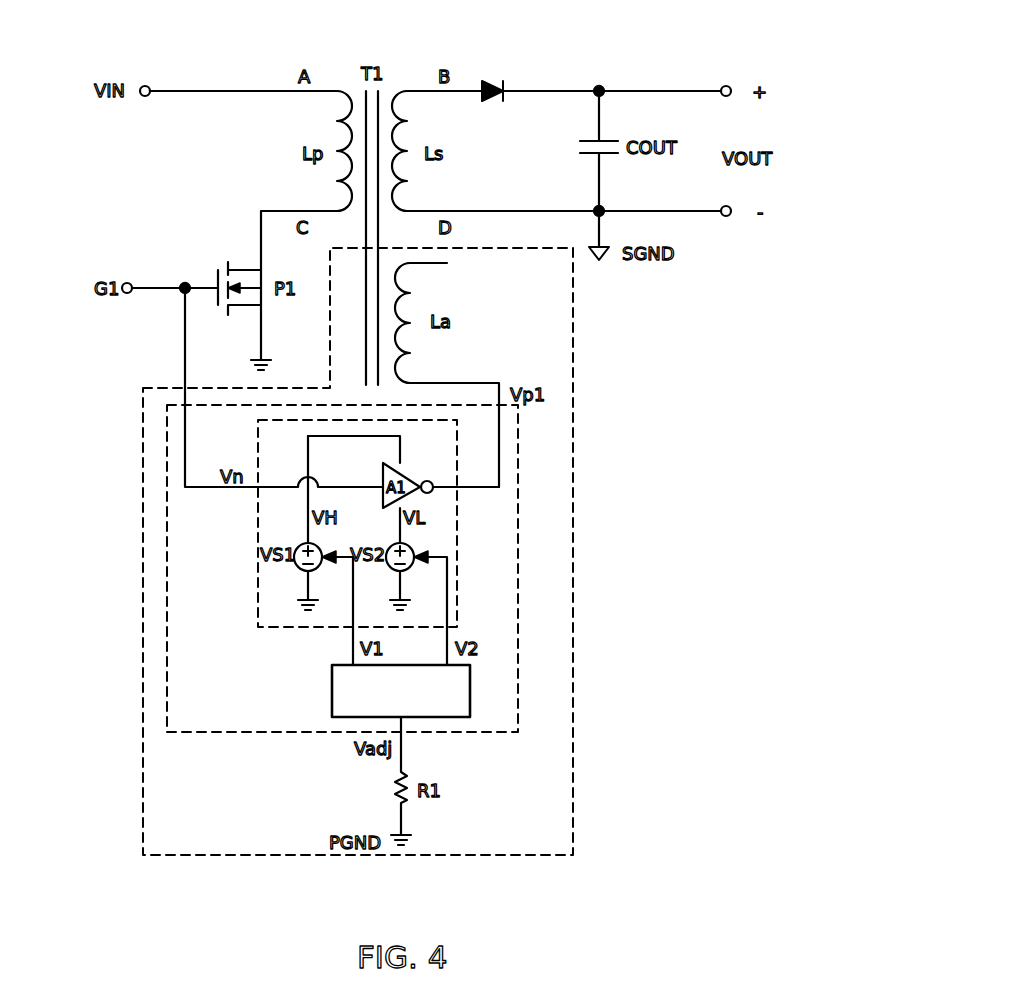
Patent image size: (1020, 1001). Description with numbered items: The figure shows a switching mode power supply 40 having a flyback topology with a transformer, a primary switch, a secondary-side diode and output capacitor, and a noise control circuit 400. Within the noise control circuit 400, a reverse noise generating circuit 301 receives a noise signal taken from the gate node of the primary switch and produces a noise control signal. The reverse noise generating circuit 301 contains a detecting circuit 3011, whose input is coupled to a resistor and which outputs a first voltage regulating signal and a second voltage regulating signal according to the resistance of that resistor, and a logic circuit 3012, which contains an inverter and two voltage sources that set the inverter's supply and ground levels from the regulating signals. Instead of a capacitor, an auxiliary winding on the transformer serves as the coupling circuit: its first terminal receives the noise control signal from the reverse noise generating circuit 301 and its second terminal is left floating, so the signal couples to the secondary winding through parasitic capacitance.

The switching mode power supply 40 is at (706, 52).
The noise control circuit 400 is at (545, 839).
The reverse noise generating circuit 301 is at (214, 719).
The logic circuit 3012 is at (258, 618).
The detecting circuit 3011 is at (401, 691).